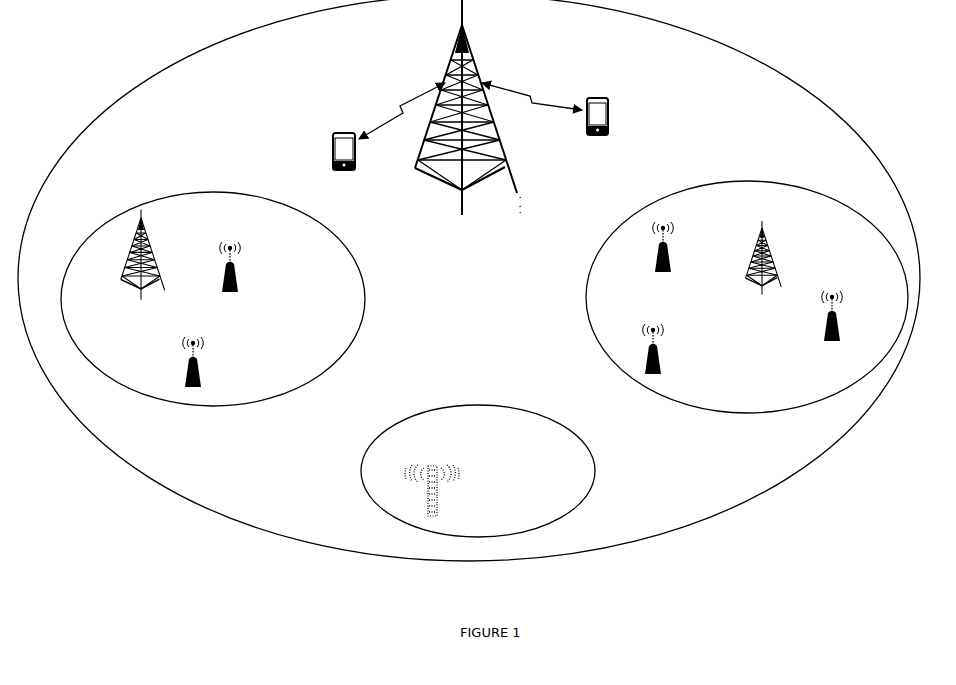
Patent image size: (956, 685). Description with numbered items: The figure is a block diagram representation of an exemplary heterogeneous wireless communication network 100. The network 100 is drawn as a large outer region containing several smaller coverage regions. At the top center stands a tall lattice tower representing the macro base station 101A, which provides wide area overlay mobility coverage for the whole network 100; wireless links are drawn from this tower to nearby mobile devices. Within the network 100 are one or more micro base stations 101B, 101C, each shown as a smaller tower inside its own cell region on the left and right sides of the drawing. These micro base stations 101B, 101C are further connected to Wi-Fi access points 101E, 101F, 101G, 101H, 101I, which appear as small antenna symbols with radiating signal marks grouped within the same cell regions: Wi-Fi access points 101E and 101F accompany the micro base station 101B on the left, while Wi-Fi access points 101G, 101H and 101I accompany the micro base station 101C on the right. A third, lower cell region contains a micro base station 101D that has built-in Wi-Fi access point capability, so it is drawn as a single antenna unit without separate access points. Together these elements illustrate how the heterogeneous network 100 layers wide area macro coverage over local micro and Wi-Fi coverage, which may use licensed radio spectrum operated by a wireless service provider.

The heterogeneous wireless communication network 100 is at (790, 64).
The macro base station 101A is at (470, 52).
The micro base station 101B is at (152, 250).
The micro base station 101C is at (769, 252).
The micro base station with built-in Wi-Fi access point capability 101D is at (438, 506).
The Wi-Fi access point 101E is at (238, 278).
The Wi-Fi access point 101F is at (201, 374).
The Wi-Fi access point 101G is at (671, 252).
The Wi-Fi access point 101H is at (661, 356).
The Wi-Fi access point 101I is at (838, 317).